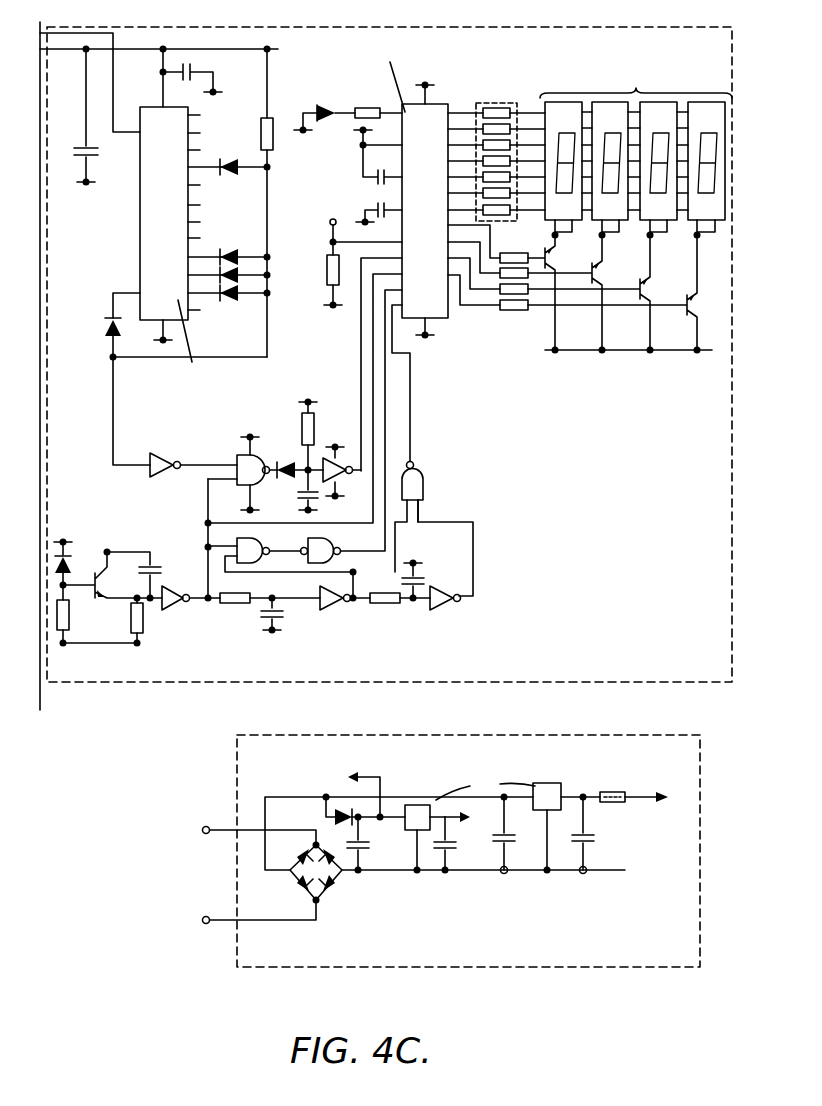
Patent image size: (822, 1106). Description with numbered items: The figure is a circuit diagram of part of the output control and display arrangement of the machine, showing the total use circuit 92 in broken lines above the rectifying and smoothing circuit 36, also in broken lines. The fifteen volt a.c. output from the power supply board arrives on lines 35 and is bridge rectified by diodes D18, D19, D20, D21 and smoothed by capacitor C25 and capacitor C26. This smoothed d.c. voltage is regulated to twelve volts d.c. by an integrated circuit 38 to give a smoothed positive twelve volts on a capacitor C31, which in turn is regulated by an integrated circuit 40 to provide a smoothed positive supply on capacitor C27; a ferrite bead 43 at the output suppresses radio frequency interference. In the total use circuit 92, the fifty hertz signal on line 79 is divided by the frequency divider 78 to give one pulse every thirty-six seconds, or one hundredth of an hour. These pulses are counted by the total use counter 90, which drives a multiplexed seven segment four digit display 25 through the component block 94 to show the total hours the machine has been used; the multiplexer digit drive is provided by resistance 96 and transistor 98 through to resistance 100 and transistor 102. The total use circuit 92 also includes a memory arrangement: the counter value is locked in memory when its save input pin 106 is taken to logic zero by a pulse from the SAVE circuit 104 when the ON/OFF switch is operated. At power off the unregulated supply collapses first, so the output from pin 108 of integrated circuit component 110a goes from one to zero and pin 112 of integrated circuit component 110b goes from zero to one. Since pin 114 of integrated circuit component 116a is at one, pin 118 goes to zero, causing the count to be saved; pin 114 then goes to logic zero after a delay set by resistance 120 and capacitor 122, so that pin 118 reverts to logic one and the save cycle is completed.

The line 79 is at (93, 33).
The frequency divider 78 is at (188, 286).
The total use counter 90 is at (468, 189).
The component block 94 is at (492, 103).
The four digit display 25 is at (636, 152).
The resistance 96 is at (508, 256).
The transistor 98 is at (600, 272).
The transistor 102 is at (694, 305).
The resistance 100 is at (513, 314).
The save input pin 106 is at (396, 310).
The pin 118 is at (414, 464).
The integrated circuit component 116a is at (420, 486).
The pin 114 is at (421, 508).
The SAVE circuit 104 is at (420, 521).
The pin 108 is at (188, 594).
The integrated circuit component 110a is at (172, 607).
The integrated circuit component 110b is at (312, 606).
The pin 112 is at (346, 602).
The resistance 120 is at (388, 605).
The capacitor 122 is at (424, 580).
The total use circuit 92 is at (168, 684).
The rectifying and smoothing circuit 36 is at (520, 733).
The lines 35 is at (203, 834).
The integrated circuit 38 is at (418, 805).
The integrated circuit 40 is at (548, 790).
The ferrite bead 43 is at (615, 792).
The diode D18 is at (302, 886).
The diode D19 is at (301, 855).
The diode D20 is at (331, 852).
The diode D21 is at (335, 886).
The capacitor C25 is at (369, 850).
The capacitor C31 is at (451, 850).
The capacitor C26 is at (513, 845).
The capacitor C27 is at (593, 840).